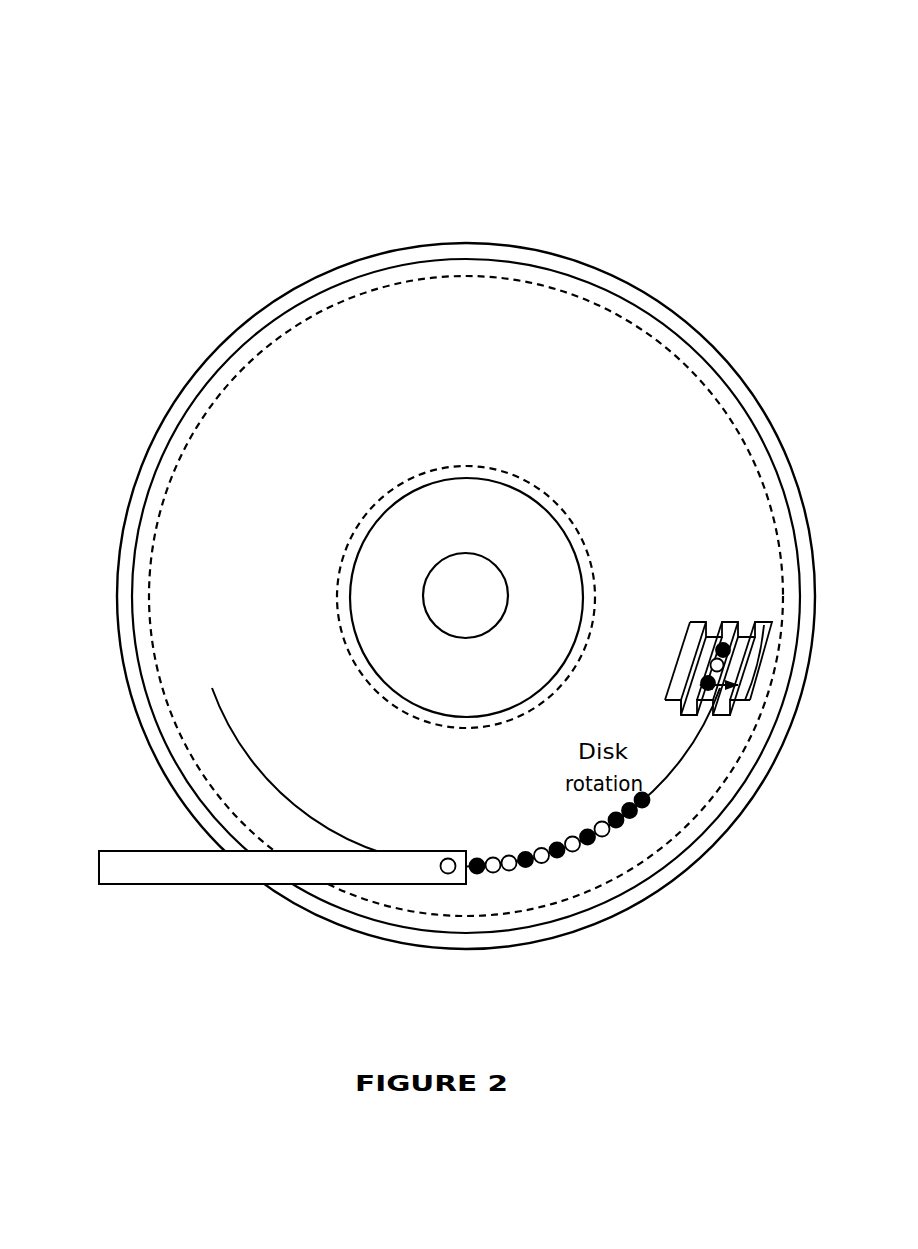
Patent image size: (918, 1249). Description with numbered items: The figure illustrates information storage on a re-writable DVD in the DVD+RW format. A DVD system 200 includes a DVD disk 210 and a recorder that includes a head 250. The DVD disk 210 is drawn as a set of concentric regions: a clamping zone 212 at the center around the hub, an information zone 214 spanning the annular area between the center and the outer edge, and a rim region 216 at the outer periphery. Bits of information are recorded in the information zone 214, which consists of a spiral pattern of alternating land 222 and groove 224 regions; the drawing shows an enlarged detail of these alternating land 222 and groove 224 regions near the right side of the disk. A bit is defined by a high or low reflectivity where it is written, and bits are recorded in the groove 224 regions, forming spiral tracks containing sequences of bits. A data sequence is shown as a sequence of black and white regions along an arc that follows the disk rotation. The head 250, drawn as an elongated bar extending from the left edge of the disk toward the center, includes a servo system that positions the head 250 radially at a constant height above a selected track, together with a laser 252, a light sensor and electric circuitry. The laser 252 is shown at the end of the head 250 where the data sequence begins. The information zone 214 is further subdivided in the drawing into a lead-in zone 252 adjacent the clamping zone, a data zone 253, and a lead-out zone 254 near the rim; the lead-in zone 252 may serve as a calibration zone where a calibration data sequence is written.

The DVD system 200 is at (682, 107).
The DVD disk 210 is at (818, 305).
The clamping zone 212 is at (466, 597).
The information zone 214 is at (348, 597).
The rim region 216 is at (264, 309).
The land 222 is at (731, 642).
The groove 224 is at (735, 690).
The head 250 is at (130, 861).
The laser 252 is at (448, 857).
The data zone 253 is at (467, 279).
The lead-out zone 254 is at (359, 291).